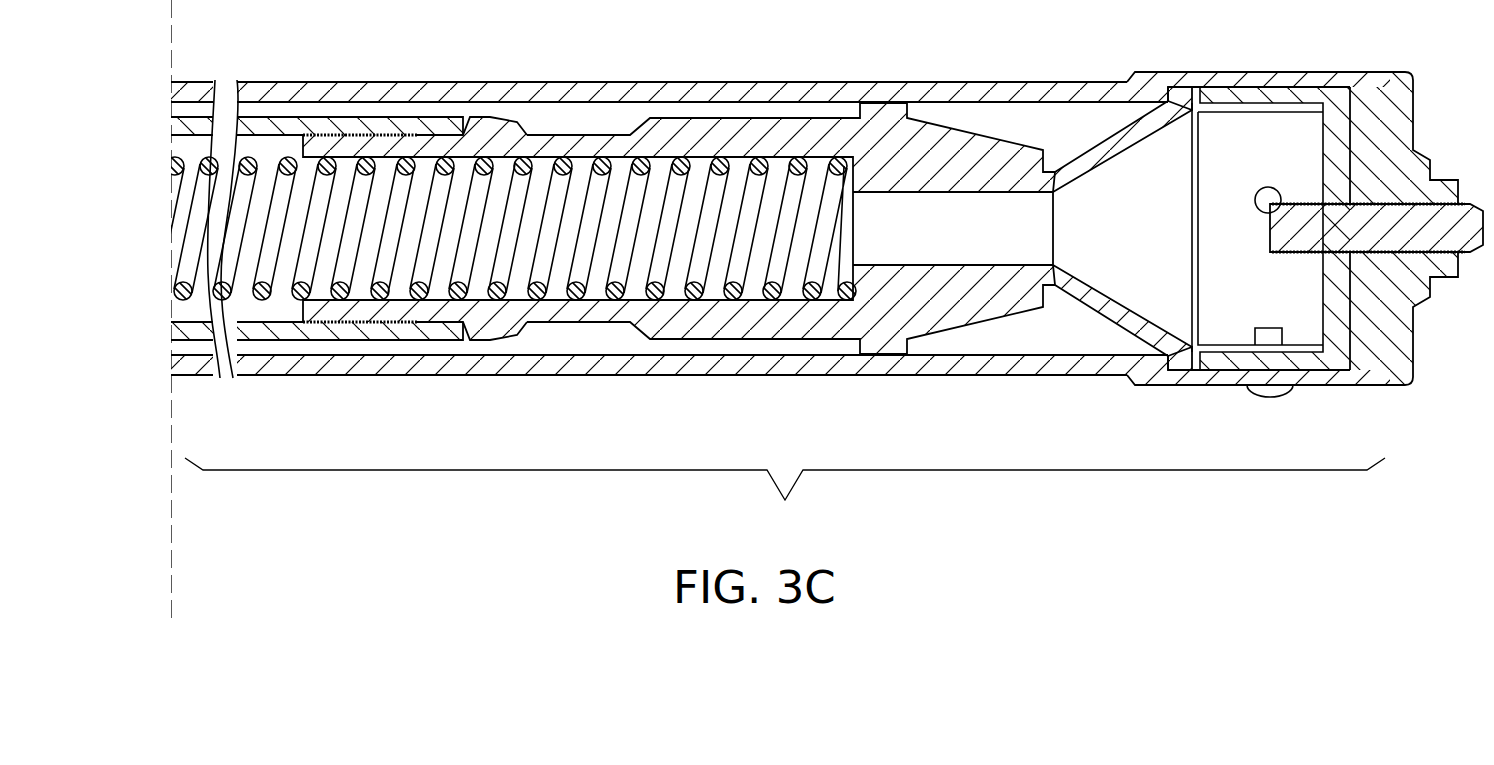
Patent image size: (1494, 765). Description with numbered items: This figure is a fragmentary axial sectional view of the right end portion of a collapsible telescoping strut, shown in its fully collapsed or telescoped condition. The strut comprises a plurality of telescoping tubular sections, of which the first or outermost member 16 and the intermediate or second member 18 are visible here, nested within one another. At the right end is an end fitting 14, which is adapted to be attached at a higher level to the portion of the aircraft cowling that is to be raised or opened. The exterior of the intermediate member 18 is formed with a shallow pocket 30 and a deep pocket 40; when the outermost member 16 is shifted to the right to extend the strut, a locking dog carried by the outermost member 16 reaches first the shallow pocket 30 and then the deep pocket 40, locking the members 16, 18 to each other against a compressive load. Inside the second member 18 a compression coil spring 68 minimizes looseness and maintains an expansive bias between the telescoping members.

The end fitting 14 is at (1405, 225).
The first or outermost telescoping member 16 is at (180, 90).
The intermediate or second telescoping member 18 is at (364, 125).
The shallow pocket 30 is at (525, 343).
The deep pocket 40 is at (622, 335).
The compression coil spring 68 is at (542, 268).